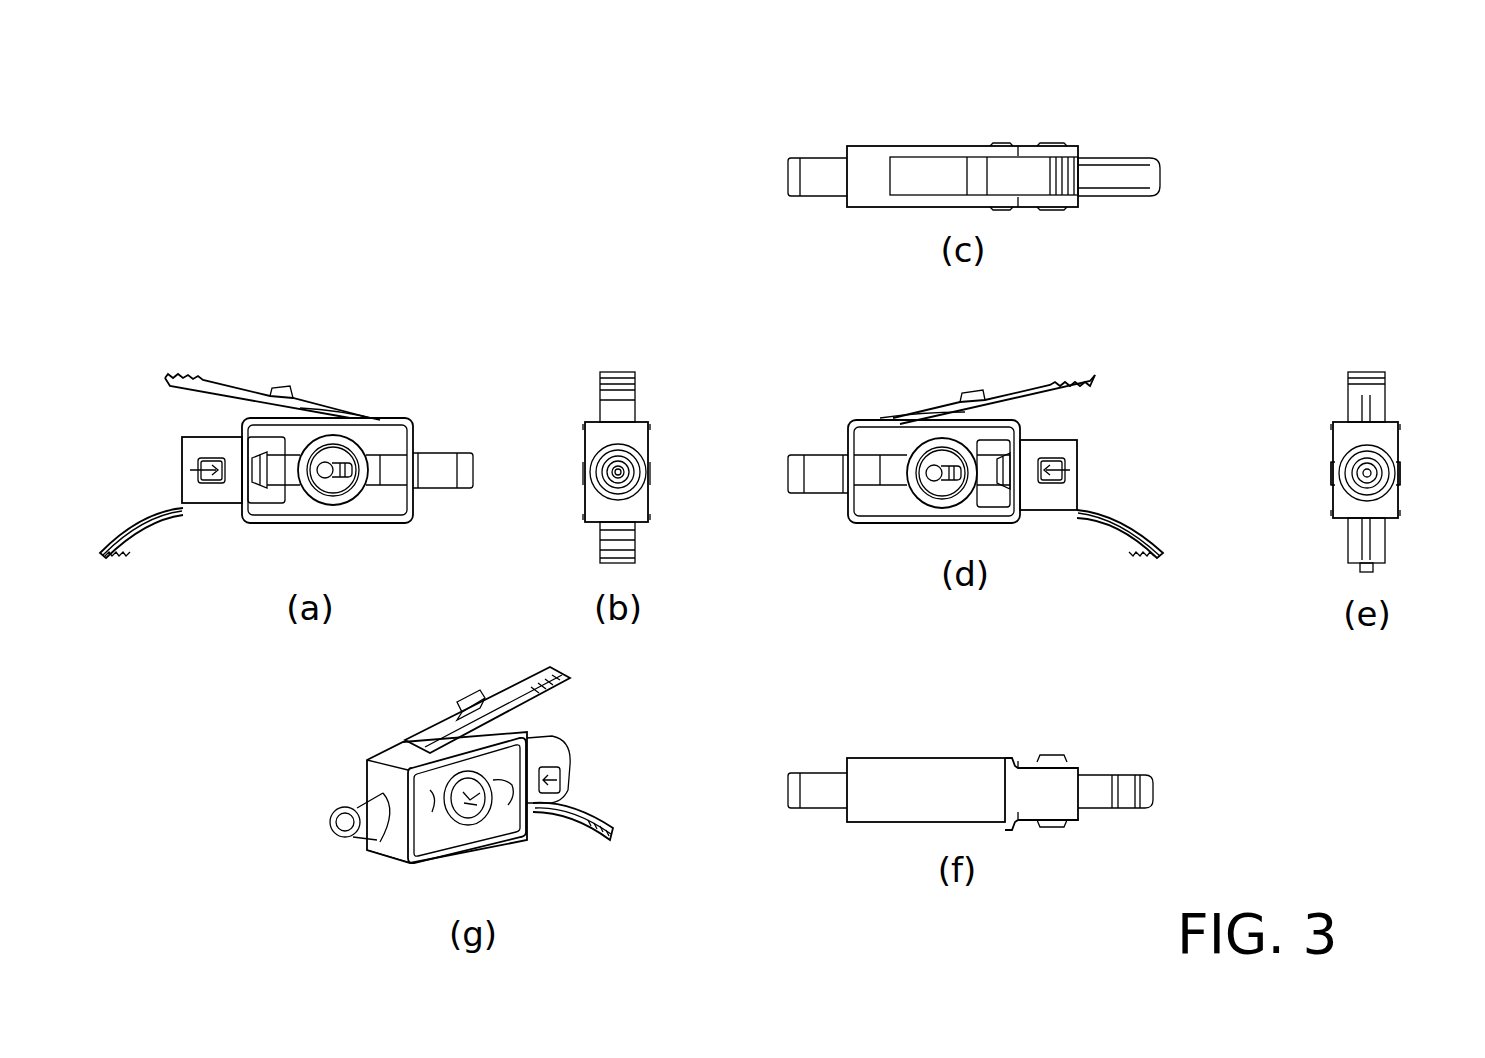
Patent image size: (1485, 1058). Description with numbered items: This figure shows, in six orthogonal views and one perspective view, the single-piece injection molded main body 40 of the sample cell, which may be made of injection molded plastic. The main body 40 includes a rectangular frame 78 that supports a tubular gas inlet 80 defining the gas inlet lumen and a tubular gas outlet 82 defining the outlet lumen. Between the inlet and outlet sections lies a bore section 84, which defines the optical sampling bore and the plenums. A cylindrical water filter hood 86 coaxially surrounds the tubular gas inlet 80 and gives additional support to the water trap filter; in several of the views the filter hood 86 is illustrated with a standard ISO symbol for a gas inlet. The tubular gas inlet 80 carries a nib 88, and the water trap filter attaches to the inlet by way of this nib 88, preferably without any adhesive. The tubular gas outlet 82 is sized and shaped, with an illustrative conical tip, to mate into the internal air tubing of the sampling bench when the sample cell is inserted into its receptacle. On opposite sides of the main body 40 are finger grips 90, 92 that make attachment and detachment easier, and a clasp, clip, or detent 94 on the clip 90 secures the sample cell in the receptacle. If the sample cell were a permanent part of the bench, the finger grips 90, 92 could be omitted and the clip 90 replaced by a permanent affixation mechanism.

The single-piece injection molded main body 40 is at (262, 352).
The rectangular frame 78 is at (378, 418).
The tubular gas inlet 80 is at (282, 478).
The tubular gas outlet 82 is at (445, 470).
The bore section 84 is at (355, 490).
The cylindrical water filter hood 86 is at (197, 455).
The nib 88 is at (258, 465).
The finger grip 90 is at (190, 378).
The finger grip 92 is at (140, 550).
The detent 94 is at (288, 388).